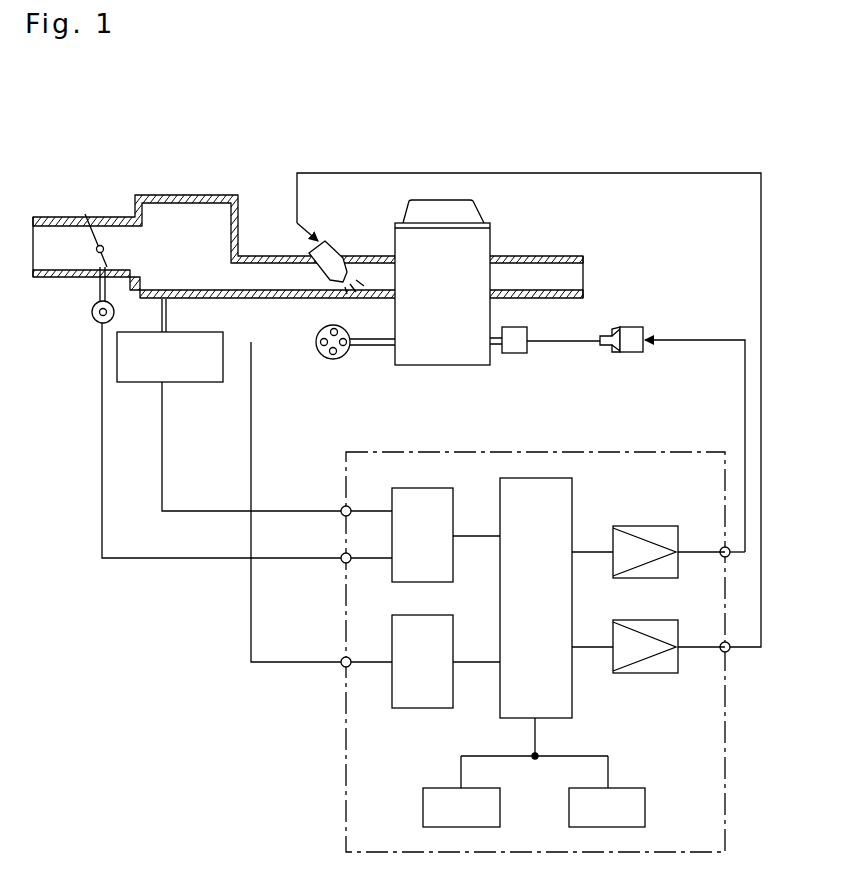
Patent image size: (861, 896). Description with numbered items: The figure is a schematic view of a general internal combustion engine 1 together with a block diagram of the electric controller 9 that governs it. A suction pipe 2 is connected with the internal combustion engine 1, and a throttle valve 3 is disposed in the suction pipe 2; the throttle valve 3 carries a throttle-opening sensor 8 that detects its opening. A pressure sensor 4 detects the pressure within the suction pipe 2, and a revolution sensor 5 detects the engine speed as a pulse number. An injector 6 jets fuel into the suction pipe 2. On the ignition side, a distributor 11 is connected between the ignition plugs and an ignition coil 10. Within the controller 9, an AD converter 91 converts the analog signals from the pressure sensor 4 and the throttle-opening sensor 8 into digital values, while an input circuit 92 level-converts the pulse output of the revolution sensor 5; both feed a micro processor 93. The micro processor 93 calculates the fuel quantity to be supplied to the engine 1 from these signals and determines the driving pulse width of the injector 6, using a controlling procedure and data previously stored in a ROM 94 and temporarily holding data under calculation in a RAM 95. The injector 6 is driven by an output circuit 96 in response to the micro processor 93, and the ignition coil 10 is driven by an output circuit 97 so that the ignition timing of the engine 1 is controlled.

The internal combustion engine 1 is at (492, 243).
The suction pipe 2 is at (265, 262).
The throttle valve 3 is at (85, 214).
The pressure sensor 4 is at (192, 383).
The revolution sensor 5 is at (322, 357).
The injector 6 is at (340, 241).
The throttle-opening sensor 8 is at (90, 318).
The controller 9 is at (345, 718).
The ignition coil 10 is at (633, 353).
The distributor 11 is at (513, 353).
The AD converter 91 is at (423, 488).
The input circuit 92 is at (442, 615).
The micro processor 93 is at (572, 505).
The ROM 94 is at (433, 788).
The RAM 95 is at (633, 788).
The output circuit 96 is at (648, 673).
The output circuit 97 is at (656, 527).